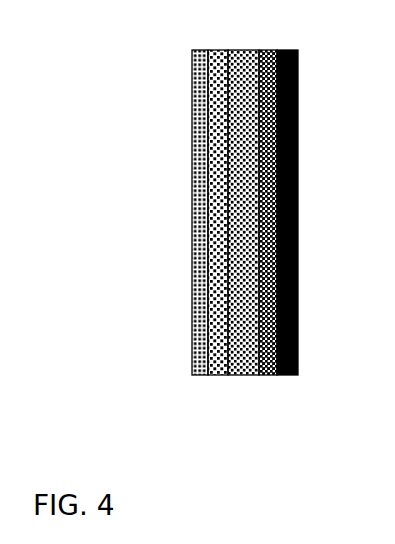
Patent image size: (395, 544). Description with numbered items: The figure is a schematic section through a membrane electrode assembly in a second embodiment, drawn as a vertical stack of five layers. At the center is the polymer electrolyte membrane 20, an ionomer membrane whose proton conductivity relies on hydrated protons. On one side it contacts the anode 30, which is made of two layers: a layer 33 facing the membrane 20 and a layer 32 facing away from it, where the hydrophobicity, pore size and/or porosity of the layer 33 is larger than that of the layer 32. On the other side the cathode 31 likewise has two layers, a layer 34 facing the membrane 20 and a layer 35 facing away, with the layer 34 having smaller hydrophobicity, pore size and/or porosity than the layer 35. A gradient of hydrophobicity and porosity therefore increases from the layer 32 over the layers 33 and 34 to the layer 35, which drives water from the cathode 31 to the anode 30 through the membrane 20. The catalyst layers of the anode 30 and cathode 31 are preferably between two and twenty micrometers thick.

The polymer electrolyte membrane 20 is at (244, 348).
The anode 30 is at (188, 233).
The cathode 31 is at (301, 233).
The anode outer layer 32 is at (198, 353).
The anode membrane-facing layer 33 is at (219, 353).
The cathode membrane-facing layer 34 is at (271, 356).
The cathode outer layer 35 is at (288, 375).